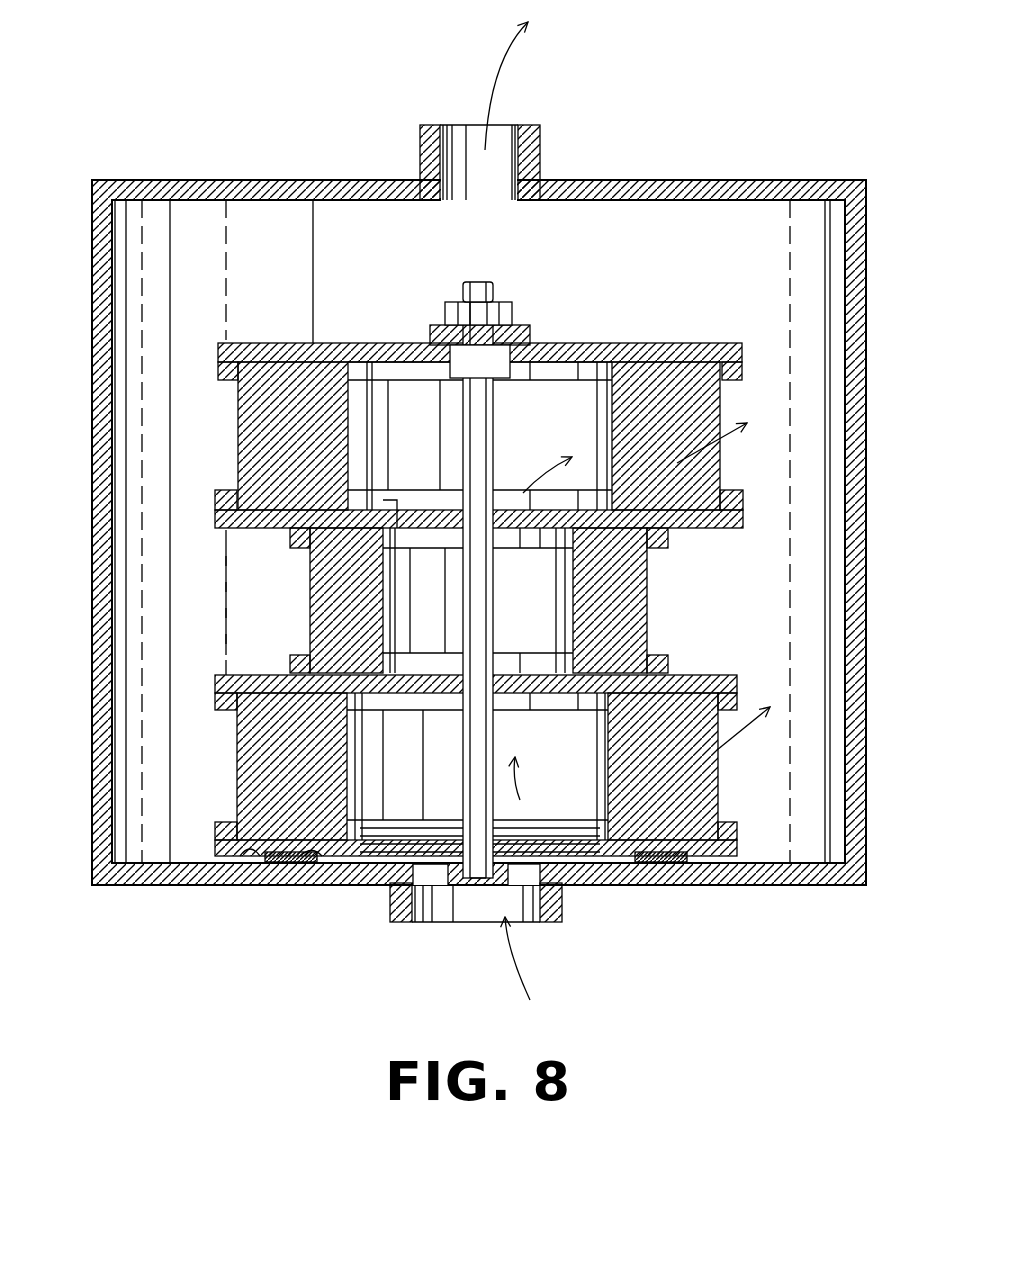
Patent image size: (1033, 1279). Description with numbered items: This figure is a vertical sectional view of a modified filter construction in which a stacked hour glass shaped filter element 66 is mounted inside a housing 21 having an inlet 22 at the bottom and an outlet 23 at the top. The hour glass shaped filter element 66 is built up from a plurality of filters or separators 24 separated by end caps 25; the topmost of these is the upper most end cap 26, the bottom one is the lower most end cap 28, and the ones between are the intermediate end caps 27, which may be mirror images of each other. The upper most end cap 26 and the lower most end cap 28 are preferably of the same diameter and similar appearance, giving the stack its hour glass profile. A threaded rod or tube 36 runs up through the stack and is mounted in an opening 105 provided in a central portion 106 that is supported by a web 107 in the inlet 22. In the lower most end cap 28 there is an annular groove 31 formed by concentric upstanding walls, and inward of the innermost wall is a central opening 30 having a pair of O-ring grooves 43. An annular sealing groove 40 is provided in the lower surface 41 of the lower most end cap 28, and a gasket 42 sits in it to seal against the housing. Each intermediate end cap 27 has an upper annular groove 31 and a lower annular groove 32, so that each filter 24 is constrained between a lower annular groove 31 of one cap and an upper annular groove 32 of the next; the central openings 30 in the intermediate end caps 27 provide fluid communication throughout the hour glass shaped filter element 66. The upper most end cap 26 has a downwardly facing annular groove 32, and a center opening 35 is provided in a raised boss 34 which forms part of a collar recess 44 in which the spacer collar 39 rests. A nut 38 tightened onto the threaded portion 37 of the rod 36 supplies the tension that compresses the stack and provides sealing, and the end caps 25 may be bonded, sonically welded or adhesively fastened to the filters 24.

The housing 21 is at (868, 350).
The inlet 22 is at (453, 922).
The outlet 23 is at (523, 128).
The filters or separators 24 is at (713, 415).
The end caps 25 is at (748, 352).
The upper most end cap 26 is at (218, 350).
The intermediate end caps 27 is at (215, 513).
The lower most end cap 28 is at (217, 836).
The central opening 30 is at (417, 517).
The annular groove 31 is at (682, 503).
The lower annular groove 32 is at (262, 385).
The raised boss 34 is at (528, 333).
The center opening 35 is at (455, 318).
The threaded rod or tube 36 is at (485, 622).
The threaded portion 37 is at (481, 282).
The nut 38 is at (502, 305).
The spacer collar 39 is at (458, 352).
The annular sealing groove 40 is at (248, 860).
The lower surface 41 is at (222, 866).
The gasket 42 is at (300, 860).
The O-ring grooves 43 is at (545, 840).
The collar recess 44 is at (503, 375).
The hour glass shaped filter element 66 is at (213, 605).
The opening 105 is at (475, 893).
The central portion 106 is at (452, 880).
The web 107 is at (527, 878).